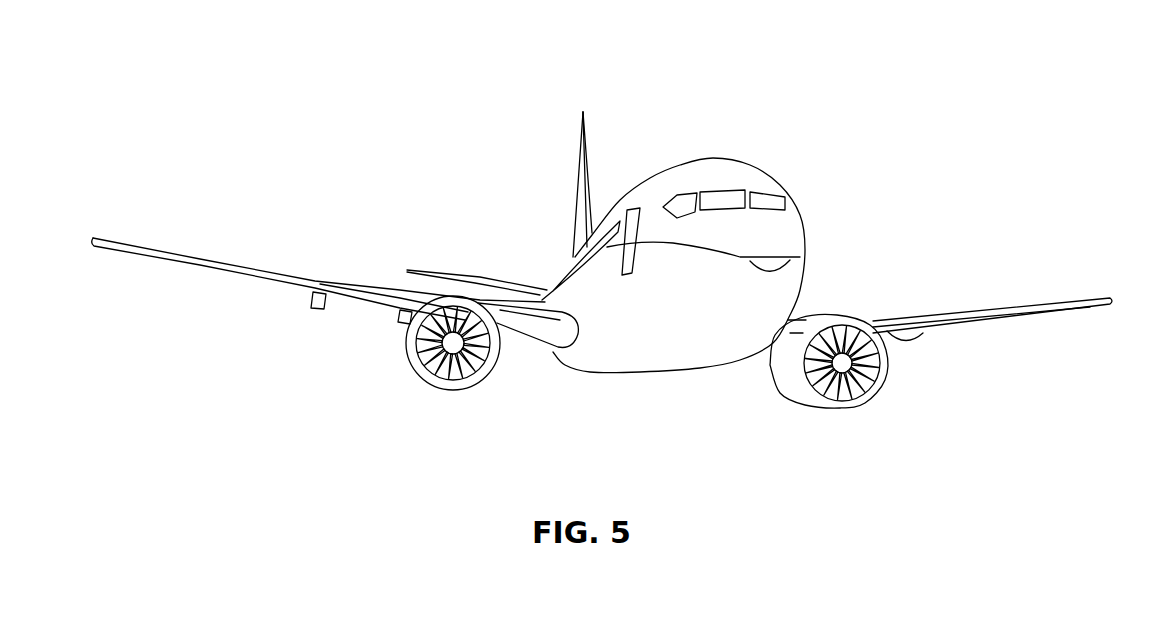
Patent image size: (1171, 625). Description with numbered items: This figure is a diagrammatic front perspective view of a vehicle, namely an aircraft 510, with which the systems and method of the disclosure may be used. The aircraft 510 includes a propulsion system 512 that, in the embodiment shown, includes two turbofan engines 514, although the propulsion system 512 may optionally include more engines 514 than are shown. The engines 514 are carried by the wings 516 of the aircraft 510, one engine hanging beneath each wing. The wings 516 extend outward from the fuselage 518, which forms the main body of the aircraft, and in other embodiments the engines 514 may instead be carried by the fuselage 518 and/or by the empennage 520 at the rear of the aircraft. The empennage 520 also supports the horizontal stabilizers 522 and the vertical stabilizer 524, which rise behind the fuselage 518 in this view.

The aircraft 510 is at (347, 56).
The propulsion system 512 is at (923, 398).
The turbofan engines 514 is at (447, 388).
The wings 516 is at (228, 265).
The fuselage 518 is at (802, 223).
The empennage 520 is at (573, 250).
The horizontal stabilizers 522 is at (445, 268).
The vertical stabilizer 524 is at (582, 150).